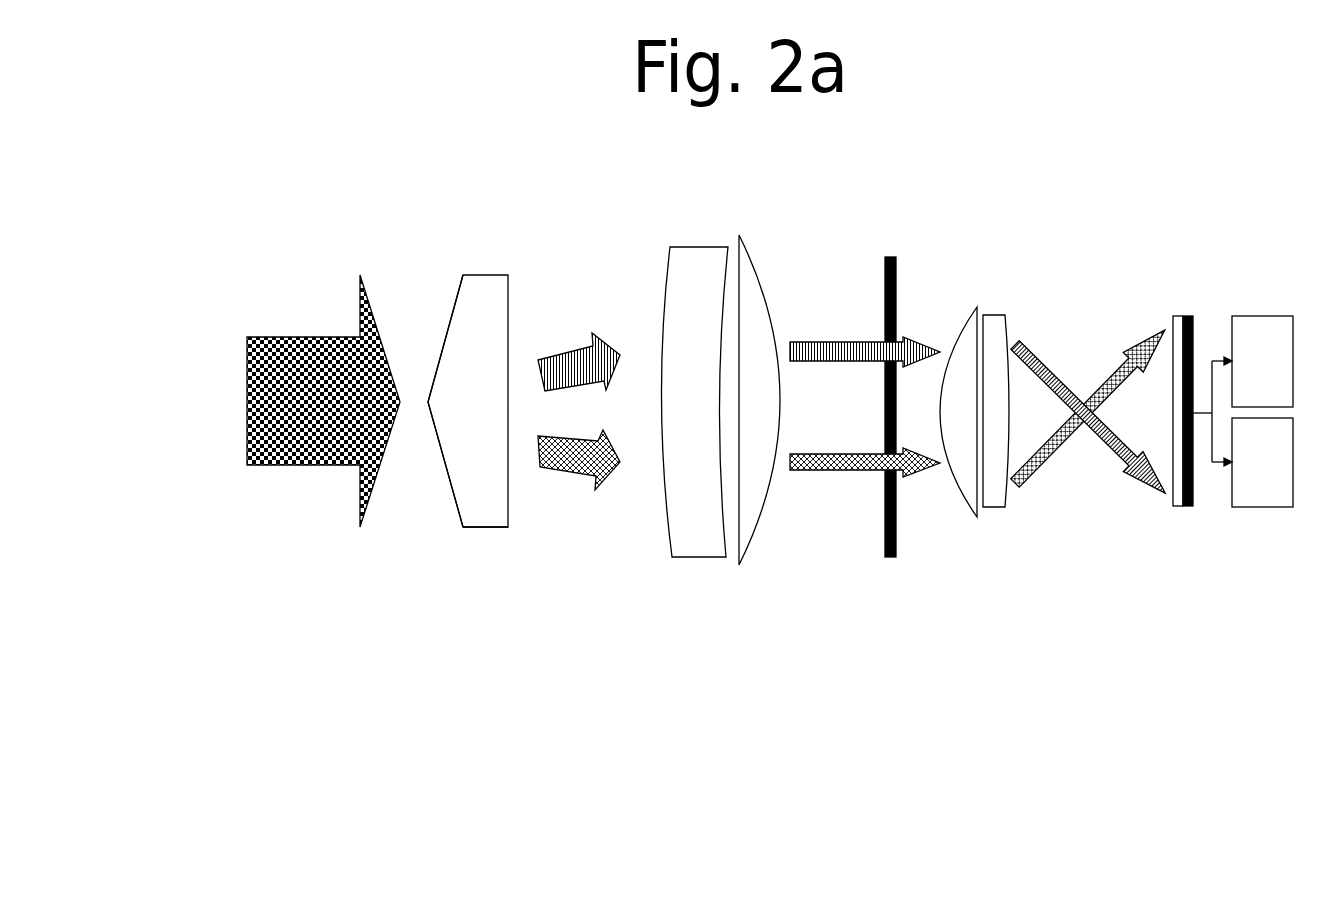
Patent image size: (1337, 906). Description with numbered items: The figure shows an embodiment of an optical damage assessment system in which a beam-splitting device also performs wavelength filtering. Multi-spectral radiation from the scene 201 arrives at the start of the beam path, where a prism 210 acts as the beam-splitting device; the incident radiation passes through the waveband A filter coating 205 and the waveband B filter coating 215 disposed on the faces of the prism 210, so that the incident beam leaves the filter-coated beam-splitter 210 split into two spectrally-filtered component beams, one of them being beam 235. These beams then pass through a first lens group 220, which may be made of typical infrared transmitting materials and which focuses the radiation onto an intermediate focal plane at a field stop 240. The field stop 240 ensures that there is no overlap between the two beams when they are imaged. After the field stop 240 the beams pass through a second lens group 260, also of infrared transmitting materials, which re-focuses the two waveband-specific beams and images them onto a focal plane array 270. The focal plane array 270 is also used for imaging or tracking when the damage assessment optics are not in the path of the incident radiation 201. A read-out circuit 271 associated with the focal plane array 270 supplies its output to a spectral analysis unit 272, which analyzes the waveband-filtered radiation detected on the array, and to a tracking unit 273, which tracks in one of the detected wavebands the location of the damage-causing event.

The multi-spectral radiation from the scene 201 is at (311, 421).
The waveband A filter coating 205 is at (405, 451).
The prism 210 is at (580, 639).
The waveband B filter coating 215 is at (358, 381).
The first lens group 220 is at (666, 345).
The spectrally-filtered component beam 235 is at (856, 427).
The field stop 240 is at (839, 494).
The second lens group 260 is at (937, 554).
The focal plane array 270 is at (1124, 528).
The read-out circuit 271 is at (1134, 553).
The spectral analysis unit 272 is at (1250, 528).
The tracking unit 273 is at (1239, 327).